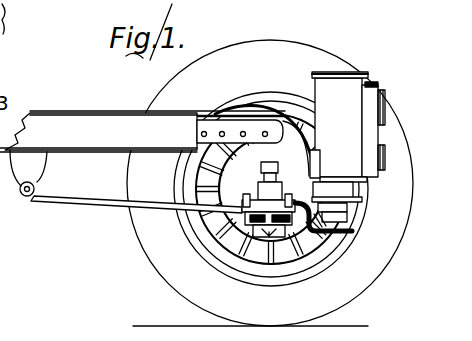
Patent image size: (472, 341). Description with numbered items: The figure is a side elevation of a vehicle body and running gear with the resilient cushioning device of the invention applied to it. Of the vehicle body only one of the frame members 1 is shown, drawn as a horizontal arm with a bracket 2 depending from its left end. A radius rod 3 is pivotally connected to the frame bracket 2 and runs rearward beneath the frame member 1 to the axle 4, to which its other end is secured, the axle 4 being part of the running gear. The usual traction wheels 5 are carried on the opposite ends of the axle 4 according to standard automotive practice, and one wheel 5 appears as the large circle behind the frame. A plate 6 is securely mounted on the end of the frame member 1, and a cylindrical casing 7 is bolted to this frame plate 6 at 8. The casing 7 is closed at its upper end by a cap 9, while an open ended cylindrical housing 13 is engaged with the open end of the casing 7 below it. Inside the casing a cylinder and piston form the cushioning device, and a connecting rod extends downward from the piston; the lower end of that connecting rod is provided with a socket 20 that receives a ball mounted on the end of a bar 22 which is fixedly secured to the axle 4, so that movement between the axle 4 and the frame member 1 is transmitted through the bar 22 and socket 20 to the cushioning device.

The frame member 1 is at (116, 130).
The bracket 2 is at (33, 180).
The radius rod 3 is at (70, 213).
The axle 4 is at (253, 250).
The traction wheel 5 is at (173, 277).
The plate 6 is at (284, 130).
The cylindrical casing 7 is at (331, 111).
The bolted connection 8 is at (321, 159).
The cap 9 is at (339, 72).
The cylindrical housing 13 is at (354, 190).
The socket 20 is at (354, 220).
The bar 22 is at (324, 242).